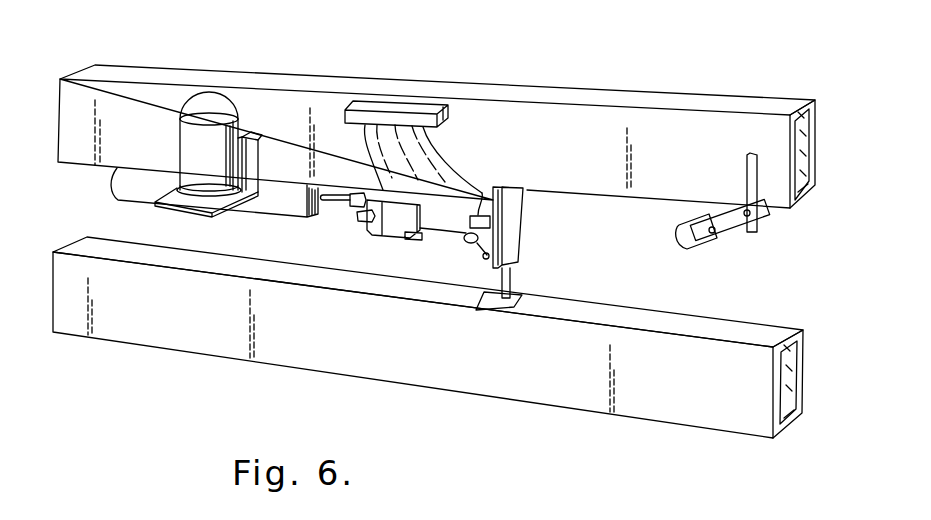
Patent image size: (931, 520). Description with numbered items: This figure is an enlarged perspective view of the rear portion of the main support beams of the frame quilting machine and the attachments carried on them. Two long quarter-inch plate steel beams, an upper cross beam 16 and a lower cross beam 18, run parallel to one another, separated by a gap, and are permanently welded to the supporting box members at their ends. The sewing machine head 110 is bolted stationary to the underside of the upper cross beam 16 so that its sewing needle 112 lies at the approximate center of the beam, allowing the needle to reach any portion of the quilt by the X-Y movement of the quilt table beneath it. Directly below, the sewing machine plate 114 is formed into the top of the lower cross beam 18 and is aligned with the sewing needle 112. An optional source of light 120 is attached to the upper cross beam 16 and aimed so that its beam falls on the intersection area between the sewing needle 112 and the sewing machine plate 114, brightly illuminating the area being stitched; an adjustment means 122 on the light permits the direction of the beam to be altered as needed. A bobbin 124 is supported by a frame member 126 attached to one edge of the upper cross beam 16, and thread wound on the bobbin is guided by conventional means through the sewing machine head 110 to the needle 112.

The upper cross beam 16 is at (573, 117).
The lower cross beam 18 is at (165, 333).
The sewing machine head 110 is at (525, 240).
The sewing needle 112 is at (512, 288).
The sewing machine plate 114 is at (500, 313).
The source of light 120 is at (697, 248).
The adjustment means 122 is at (733, 228).
The bobbin 124 is at (183, 160).
The frame member 126 is at (261, 133).